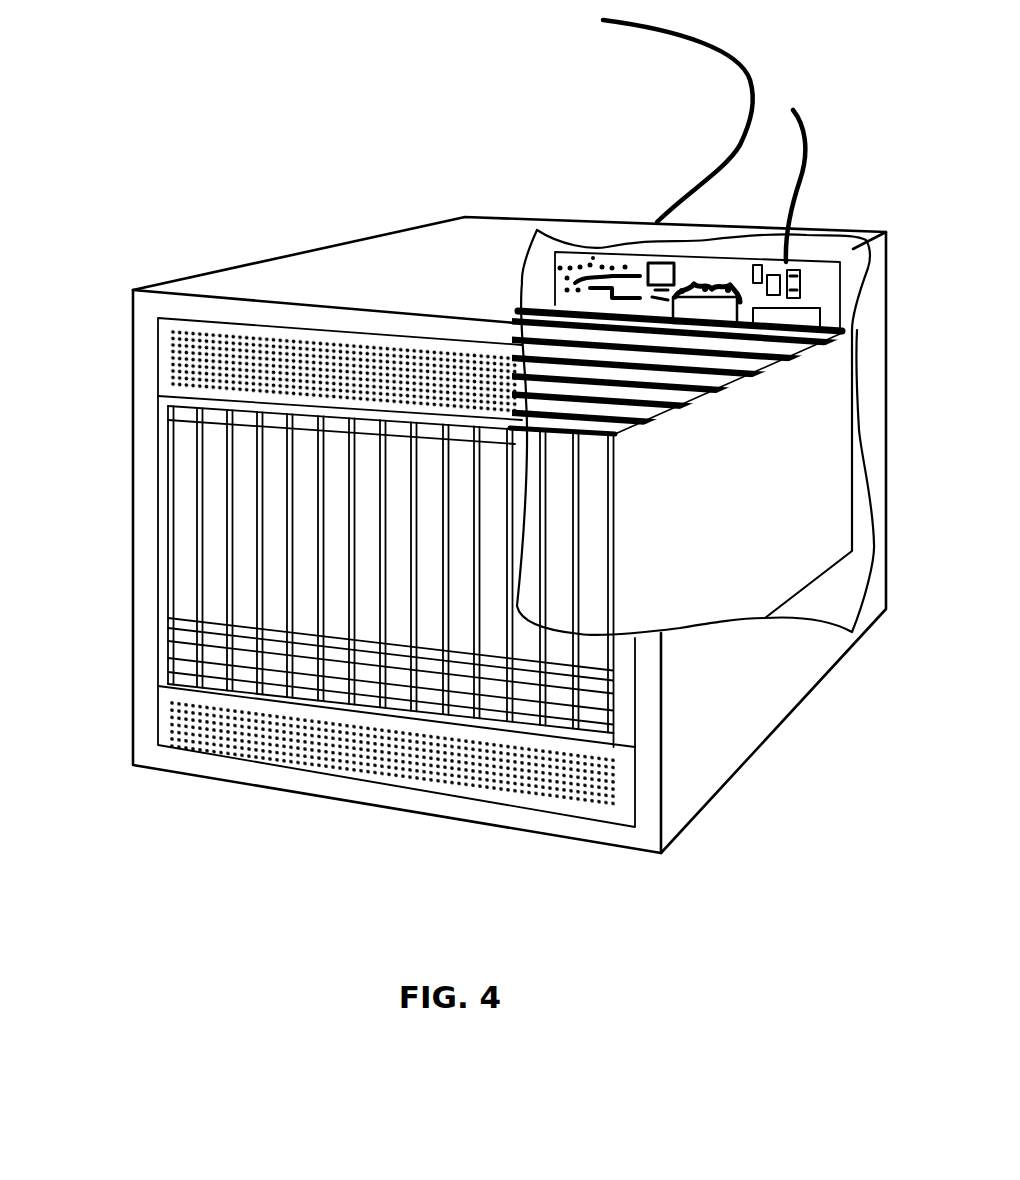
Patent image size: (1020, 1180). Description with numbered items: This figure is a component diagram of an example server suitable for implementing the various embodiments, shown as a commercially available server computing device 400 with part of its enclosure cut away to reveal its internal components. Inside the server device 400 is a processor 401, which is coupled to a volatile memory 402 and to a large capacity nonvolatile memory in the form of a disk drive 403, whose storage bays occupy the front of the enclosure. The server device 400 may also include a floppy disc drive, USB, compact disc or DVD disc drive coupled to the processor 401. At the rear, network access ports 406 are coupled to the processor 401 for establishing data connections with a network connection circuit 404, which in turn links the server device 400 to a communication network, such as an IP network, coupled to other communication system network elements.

The server computing device 400 is at (363, 238).
The processor 401 is at (720, 280).
The volatile memory 402 is at (822, 310).
The disk drive 403 is at (242, 488).
The network connection circuit 404 is at (757, 95).
The network access ports 406 is at (520, 303).